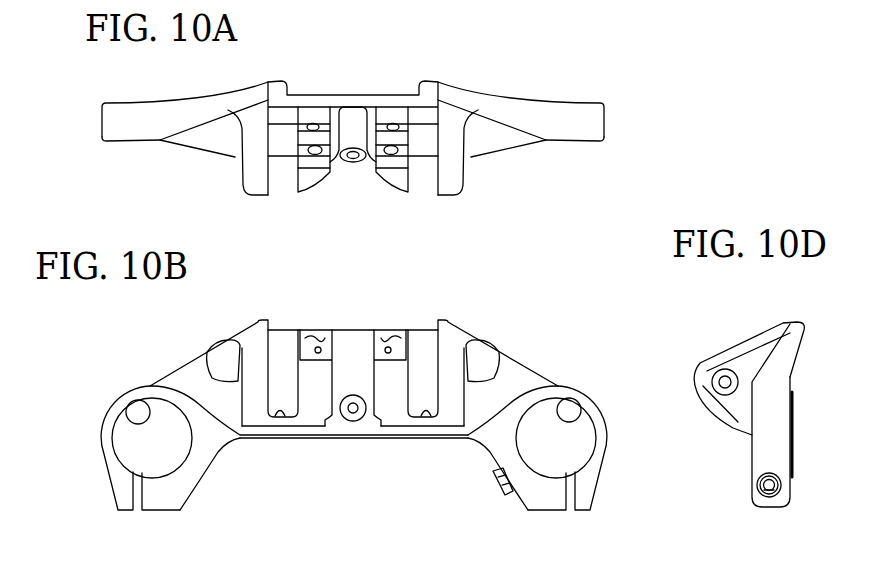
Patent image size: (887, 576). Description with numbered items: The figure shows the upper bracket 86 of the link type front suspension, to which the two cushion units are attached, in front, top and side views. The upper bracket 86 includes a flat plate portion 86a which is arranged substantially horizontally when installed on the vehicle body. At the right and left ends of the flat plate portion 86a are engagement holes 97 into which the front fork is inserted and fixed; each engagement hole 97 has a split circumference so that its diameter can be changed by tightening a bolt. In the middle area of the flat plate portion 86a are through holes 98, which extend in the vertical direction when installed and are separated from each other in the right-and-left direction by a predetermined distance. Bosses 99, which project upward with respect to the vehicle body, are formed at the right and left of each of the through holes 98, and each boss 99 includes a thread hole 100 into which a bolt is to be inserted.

In FIG. 10A, the upper bracket 86 is at (545, 93).
In FIG. 10B, the upper bracket 86 is at (526, 350).
In FIG. 10D, the upper bracket 86 is at (797, 437).
In FIG. 10B, the flat plate portion 86a is at (232, 439).
In FIG. 10B, the engagement hole 97 is at (127, 420).
In FIG. 10B, the through hole 98 is at (418, 430).
In FIG. 10A, the boss 99 is at (250, 187).
In FIG. 10B, the boss 99 is at (306, 378).
In FIG. 10D, the boss 99 is at (748, 354).
In FIG. 10B, the thread hole 100 is at (498, 343).
In FIG. 10D, the thread hole 100 is at (718, 371).